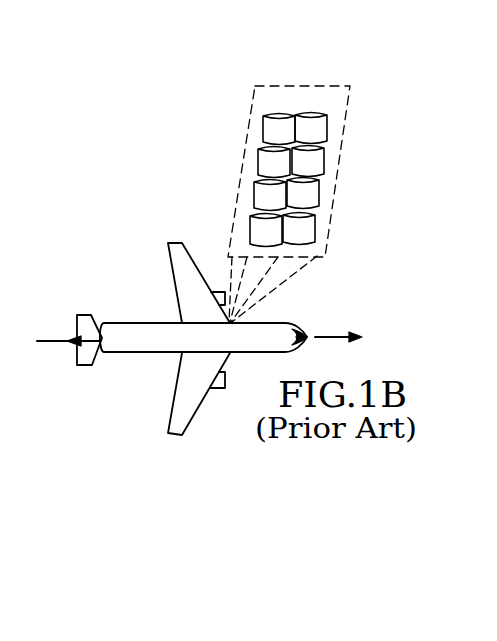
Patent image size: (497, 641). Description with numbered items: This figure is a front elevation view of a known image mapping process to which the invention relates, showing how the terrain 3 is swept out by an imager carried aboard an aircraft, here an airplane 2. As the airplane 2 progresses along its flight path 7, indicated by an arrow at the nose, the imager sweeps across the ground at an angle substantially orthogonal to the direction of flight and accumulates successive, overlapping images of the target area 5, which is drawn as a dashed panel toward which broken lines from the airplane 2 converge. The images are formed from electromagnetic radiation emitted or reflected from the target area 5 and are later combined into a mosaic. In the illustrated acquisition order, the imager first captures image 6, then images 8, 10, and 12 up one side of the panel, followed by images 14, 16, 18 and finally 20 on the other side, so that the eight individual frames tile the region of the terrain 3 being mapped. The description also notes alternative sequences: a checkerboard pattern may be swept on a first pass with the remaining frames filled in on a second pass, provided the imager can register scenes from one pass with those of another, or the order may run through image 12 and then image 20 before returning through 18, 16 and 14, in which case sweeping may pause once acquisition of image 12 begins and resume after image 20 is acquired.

The airplane 2 is at (157, 323).
The terrain 3 is at (305, 66).
The target area 5 is at (336, 84).
The image 6 is at (251, 217).
The flight path 7 is at (333, 337).
The image 8 is at (254, 187).
The image 10 is at (258, 155).
The image area 12 is at (262, 122).
The image 14 is at (318, 224).
The image 16 is at (321, 189).
The image 18 is at (326, 156).
The image area 20 is at (329, 122).